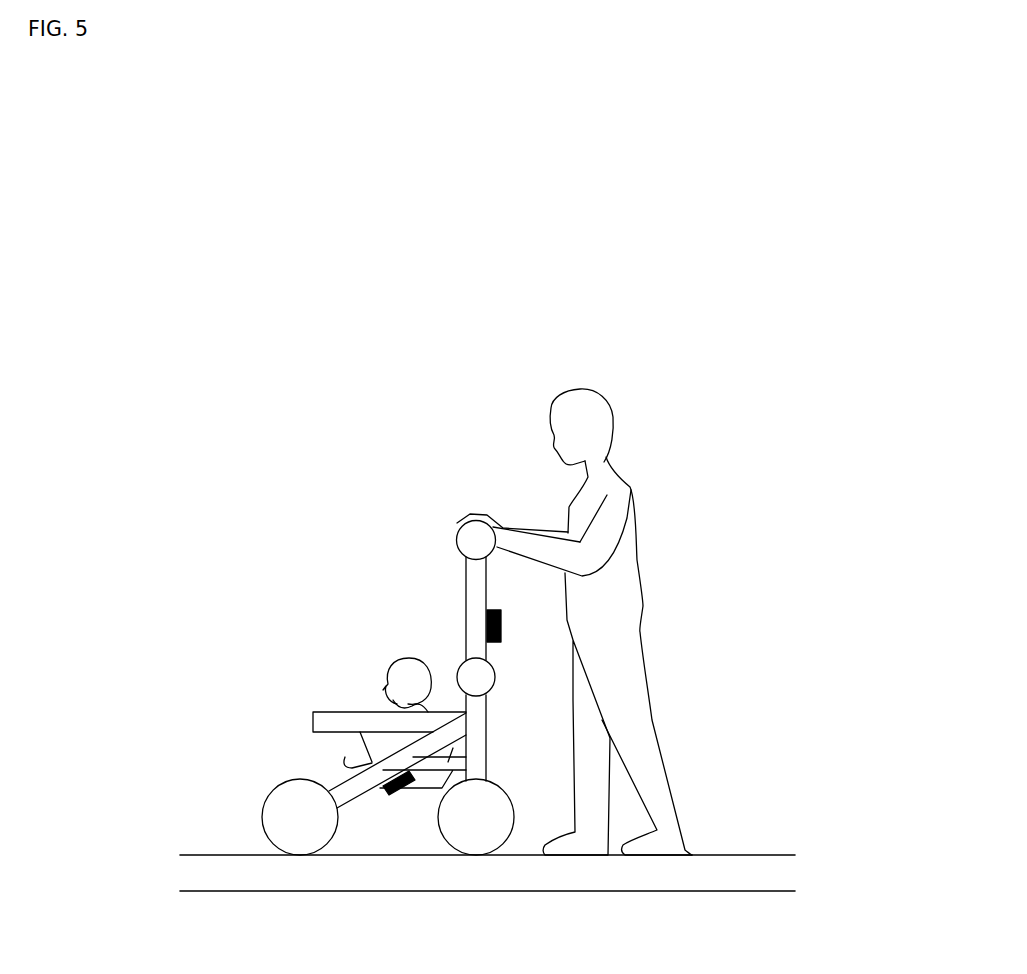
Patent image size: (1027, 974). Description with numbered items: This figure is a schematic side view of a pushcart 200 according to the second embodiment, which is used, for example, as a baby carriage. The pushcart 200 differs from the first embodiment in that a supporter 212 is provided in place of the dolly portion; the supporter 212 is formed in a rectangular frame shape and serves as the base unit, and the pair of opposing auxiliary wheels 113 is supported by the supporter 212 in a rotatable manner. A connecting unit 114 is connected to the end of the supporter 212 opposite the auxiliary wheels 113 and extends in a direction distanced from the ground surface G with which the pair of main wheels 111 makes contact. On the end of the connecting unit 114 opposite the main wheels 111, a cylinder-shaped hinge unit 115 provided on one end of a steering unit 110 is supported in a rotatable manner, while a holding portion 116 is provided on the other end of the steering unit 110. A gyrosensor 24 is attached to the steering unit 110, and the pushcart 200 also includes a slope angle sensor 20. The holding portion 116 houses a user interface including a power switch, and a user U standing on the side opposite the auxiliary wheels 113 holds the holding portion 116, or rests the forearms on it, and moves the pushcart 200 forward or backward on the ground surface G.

The pushcart 200 is at (270, 594).
The holding portion 116 is at (468, 543).
The steering unit 110 is at (470, 588).
The gyrosensor 24 is at (502, 608).
The hinge unit 115 is at (487, 678).
The connecting unit 114 is at (478, 730).
The main wheel 111 is at (478, 835).
The auxiliary wheel 113 is at (293, 835).
The supporter 212 is at (357, 788).
The slope angle sensor 20 is at (403, 796).
The user U is at (600, 412).
The ground surface G is at (548, 873).